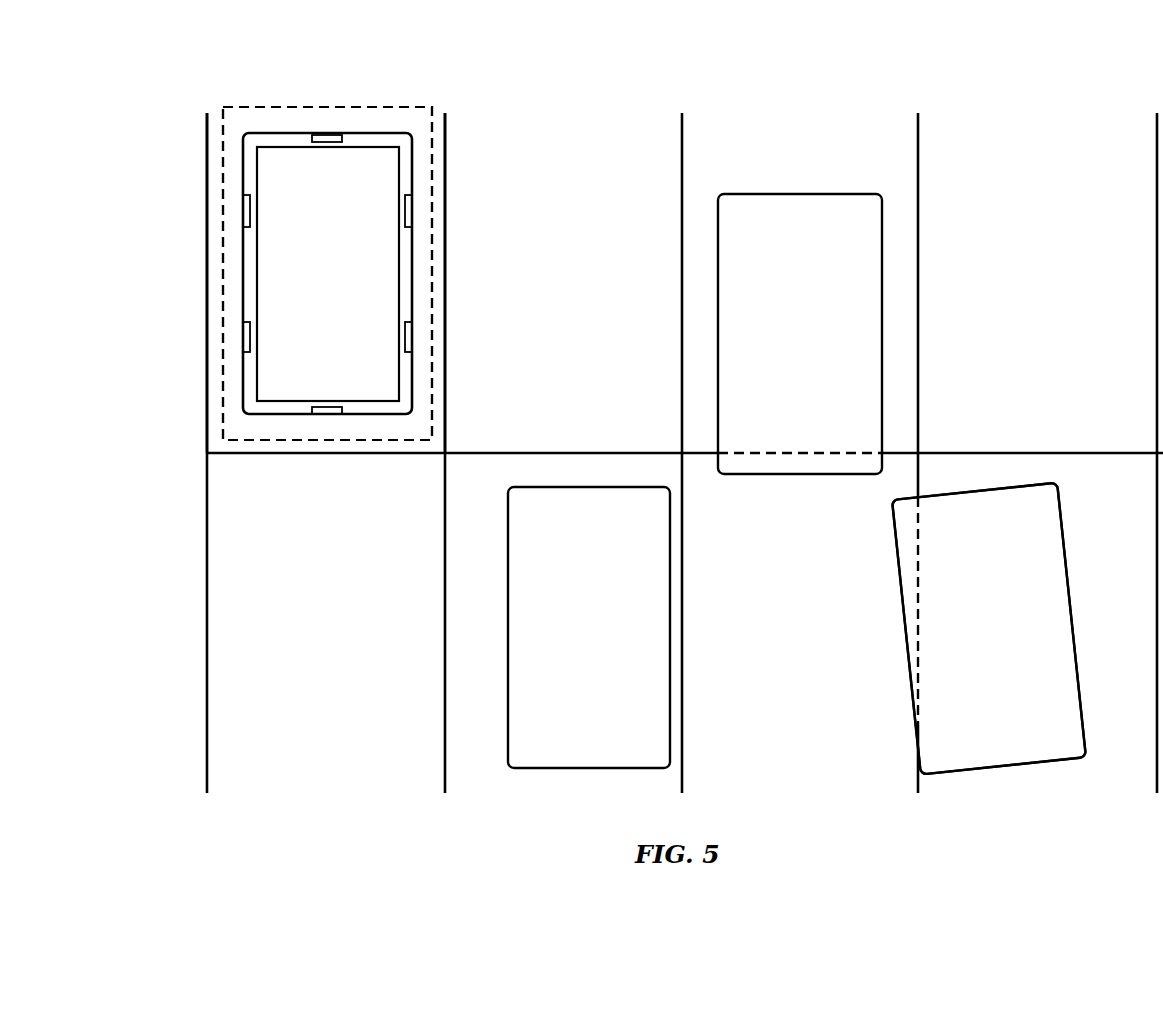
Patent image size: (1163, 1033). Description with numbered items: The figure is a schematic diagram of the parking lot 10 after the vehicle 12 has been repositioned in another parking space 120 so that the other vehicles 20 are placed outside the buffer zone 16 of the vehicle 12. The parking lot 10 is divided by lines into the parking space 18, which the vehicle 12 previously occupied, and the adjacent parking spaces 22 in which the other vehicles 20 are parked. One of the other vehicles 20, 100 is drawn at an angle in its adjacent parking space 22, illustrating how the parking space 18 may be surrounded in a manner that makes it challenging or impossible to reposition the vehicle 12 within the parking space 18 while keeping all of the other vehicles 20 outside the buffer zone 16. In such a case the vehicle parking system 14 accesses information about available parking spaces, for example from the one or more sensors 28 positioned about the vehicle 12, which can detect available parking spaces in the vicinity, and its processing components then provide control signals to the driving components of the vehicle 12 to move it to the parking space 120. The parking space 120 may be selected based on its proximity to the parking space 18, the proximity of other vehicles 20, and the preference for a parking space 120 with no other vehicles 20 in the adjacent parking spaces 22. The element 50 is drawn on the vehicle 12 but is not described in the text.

The parking lot 10 is at (1094, 45).
The vehicle 12 is at (387, 415).
The vehicle parking system 14 is at (286, 34).
The buffer zone 16 is at (327, 107).
The parking space 18 is at (812, 633).
The other vehicles 20 is at (1005, 771).
The adjacent parking spaces 22 is at (709, 390).
The sensors 28 is at (328, 412).
The display 50 is at (256, 275).
The other vehicle 100 is at (989, 629).
The parking space 120 is at (235, 445).